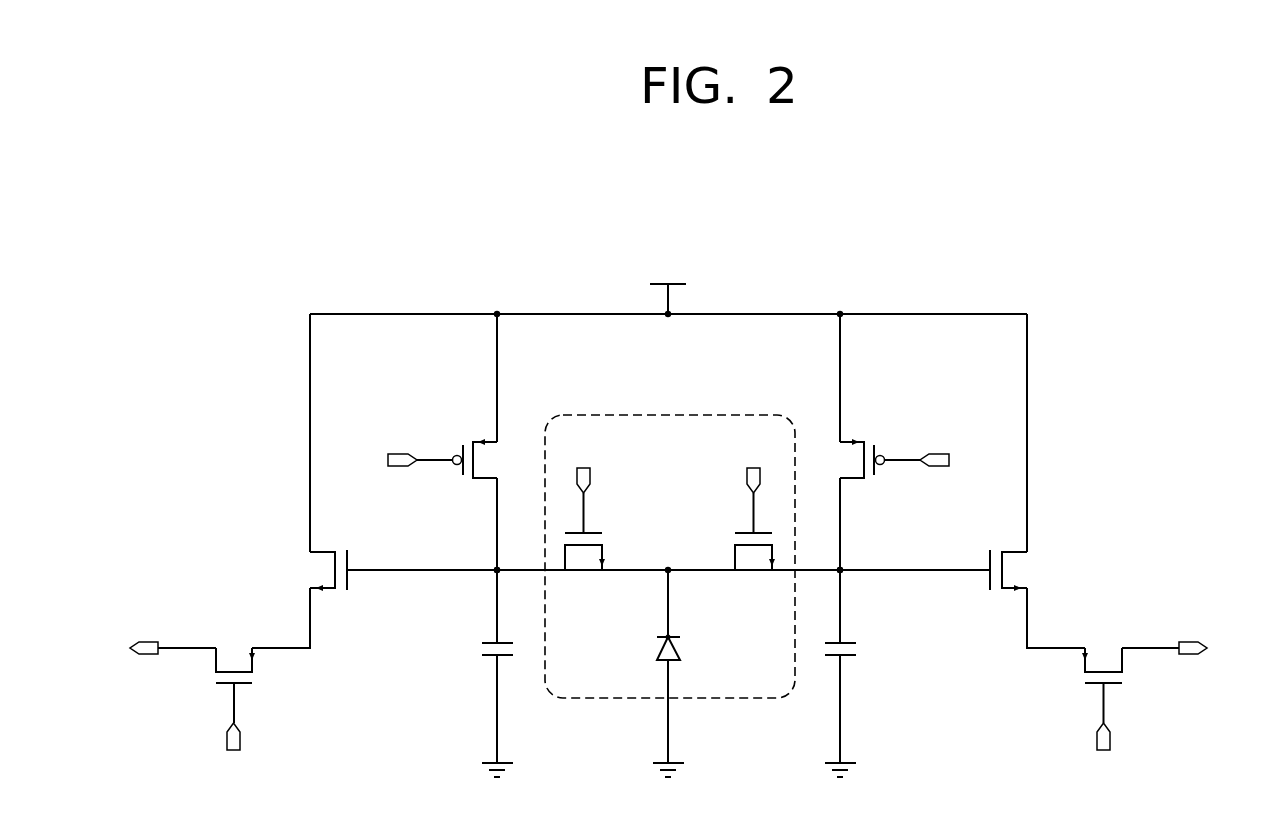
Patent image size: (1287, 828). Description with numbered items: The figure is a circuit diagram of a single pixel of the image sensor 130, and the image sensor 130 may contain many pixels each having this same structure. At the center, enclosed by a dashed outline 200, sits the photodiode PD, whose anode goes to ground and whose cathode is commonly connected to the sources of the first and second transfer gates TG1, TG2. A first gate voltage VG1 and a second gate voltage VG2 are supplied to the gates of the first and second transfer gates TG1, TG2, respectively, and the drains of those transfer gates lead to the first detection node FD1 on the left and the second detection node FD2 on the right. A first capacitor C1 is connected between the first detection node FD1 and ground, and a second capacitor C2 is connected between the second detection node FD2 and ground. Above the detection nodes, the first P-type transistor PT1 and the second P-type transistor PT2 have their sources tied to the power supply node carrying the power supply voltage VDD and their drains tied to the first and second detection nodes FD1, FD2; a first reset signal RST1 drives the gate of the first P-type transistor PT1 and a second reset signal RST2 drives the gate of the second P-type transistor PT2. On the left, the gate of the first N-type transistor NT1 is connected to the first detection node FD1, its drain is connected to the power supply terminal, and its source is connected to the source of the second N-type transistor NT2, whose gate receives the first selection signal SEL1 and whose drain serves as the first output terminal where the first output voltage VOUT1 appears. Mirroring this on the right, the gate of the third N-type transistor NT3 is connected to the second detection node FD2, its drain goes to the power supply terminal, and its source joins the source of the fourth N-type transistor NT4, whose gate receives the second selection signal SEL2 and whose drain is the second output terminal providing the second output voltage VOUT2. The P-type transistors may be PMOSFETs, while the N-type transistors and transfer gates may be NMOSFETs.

The image sensor 130 is at (990, 272).
The photodiode unit / pixel sensing region 200 is at (686, 414).
The first P-type transistor PT1 is at (476, 432).
The second P-type transistor PT2 is at (856, 432).
The first N-type transistor NT1 is at (311, 568).
The second N-type transistor NT2 is at (233, 645).
The third N-type transistor NT3 is at (1020, 570).
The fourth N-type transistor NT4 is at (1105, 655).
The first detection node FD1 is at (493, 563).
The second detection node FD2 is at (845, 563).
The first capacitor C1 is at (478, 648).
The second capacitor C2 is at (858, 648).
The first transfer gate TG1 is at (580, 563).
The second transfer gate TG2 is at (752, 563).
The photodiode PD is at (662, 647).
The power supply voltage VDD is at (668, 284).
The first reset signal RST1 is at (393, 460).
The second reset signal RST2 is at (943, 460).
The first selection signal SEL1 is at (234, 753).
The second selection signal SEL2 is at (1104, 753).
The first output voltage VOUT1 is at (139, 648).
The second output voltage VOUT2 is at (1198, 648).
The first gate voltage VG1 is at (584, 485).
The second gate voltage VG2 is at (754, 485).